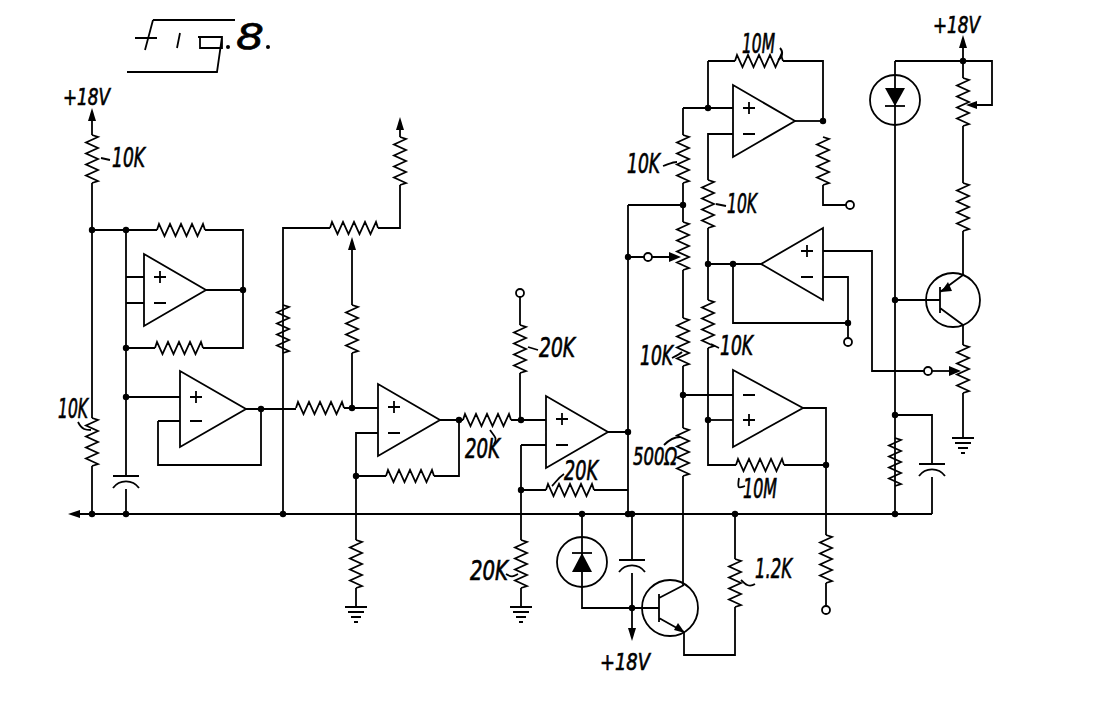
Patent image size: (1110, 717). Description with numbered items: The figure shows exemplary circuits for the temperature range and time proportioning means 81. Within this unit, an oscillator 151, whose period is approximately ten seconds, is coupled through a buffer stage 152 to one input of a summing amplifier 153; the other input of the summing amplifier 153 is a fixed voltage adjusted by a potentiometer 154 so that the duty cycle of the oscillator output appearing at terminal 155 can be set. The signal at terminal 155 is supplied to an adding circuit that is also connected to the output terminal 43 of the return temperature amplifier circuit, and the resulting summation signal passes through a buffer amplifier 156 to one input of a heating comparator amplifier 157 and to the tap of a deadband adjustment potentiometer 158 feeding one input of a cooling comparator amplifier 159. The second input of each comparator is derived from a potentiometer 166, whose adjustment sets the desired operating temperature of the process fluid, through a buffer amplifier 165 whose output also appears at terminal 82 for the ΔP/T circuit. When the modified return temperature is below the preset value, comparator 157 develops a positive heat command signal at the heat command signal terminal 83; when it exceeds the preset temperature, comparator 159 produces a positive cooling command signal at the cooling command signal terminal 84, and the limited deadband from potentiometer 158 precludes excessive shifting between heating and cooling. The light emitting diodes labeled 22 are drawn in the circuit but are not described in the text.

The oscillator 151 is at (226, 198).
The buffer stage 152 is at (220, 386).
The summing amplifier 153 is at (449, 368).
The potentiometer 154 is at (360, 226).
The terminal 155 is at (470, 418).
The buffer amplifier 156 is at (594, 412).
The heating comparator amplifier 157 is at (754, 154).
The deadband adjustment potentiometer 158 is at (678, 250).
The cooling comparator amplifier 159 is at (769, 390).
The buffer amplifier 165 is at (788, 244).
The potentiometer 166 is at (946, 354).
The output terminal 43 is at (524, 297).
The temperature range and time proportioning means 81 is at (526, 162).
The terminal 82 is at (842, 344).
The heat command signal terminal 83 is at (850, 201).
The cooling command signal terminal 84 is at (831, 610).
The light emitting diode 22 is at (750, 334).